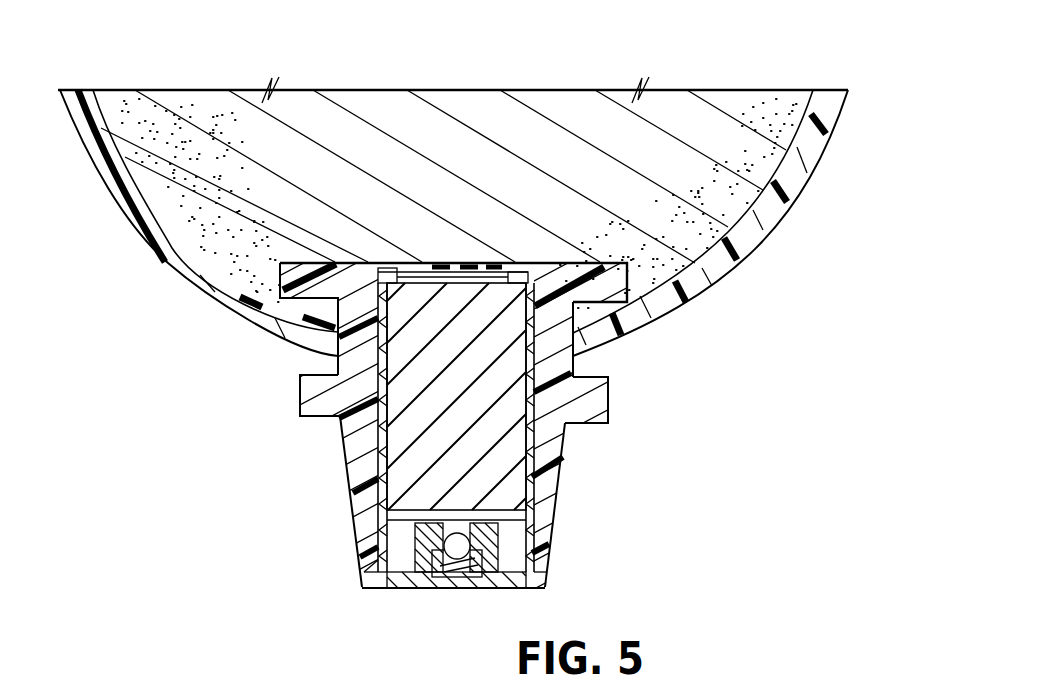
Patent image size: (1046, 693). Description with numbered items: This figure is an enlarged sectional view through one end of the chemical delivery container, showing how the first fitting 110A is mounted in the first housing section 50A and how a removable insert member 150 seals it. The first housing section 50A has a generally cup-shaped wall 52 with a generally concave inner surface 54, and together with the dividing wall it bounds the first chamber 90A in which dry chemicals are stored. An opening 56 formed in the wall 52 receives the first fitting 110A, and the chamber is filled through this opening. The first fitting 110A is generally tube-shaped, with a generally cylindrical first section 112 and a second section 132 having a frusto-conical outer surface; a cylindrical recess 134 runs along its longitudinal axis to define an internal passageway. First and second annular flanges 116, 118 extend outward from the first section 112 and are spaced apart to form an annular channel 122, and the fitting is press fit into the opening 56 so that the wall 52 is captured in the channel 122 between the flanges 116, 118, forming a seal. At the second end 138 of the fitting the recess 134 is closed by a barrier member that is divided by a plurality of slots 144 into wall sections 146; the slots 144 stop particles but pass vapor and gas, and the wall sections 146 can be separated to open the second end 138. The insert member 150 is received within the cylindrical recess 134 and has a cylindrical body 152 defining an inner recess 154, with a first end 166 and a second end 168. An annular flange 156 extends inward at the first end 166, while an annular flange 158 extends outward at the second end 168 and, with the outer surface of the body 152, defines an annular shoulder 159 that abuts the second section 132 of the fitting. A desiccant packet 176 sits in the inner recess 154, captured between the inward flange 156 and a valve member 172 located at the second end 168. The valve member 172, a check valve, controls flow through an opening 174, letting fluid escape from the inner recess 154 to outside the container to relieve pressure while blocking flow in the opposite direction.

The first housing section 50A is at (158, 262).
The wall 52 is at (801, 193).
The inner surface 54 is at (798, 145).
The opening 56 is at (566, 340).
The first chamber 90A is at (128, 163).
The first fitting 110A is at (455, 348).
The first section 112 is at (337, 369).
The first annular flange 116 is at (688, 299).
The second annular flange 118 is at (609, 405).
The annular channel 122 is at (578, 369).
The second section 132 is at (357, 511).
The cylindrical recess 134 is at (356, 423).
The second end 138 is at (340, 260).
The slots 144 is at (460, 262).
The wall sections 146 is at (425, 262).
The insert member 150 is at (548, 449).
The cylindrical body 152 is at (537, 490).
The inner recess 154 is at (508, 520).
The annular flange 156 is at (388, 262).
The annular flange 158 is at (362, 589).
The annular shoulder 159 is at (552, 562).
The first end 166 is at (504, 275).
The second end 168 is at (398, 589).
The valve member 172 is at (507, 547).
The opening 174 is at (456, 589).
The desiccant packet 176 is at (362, 549).